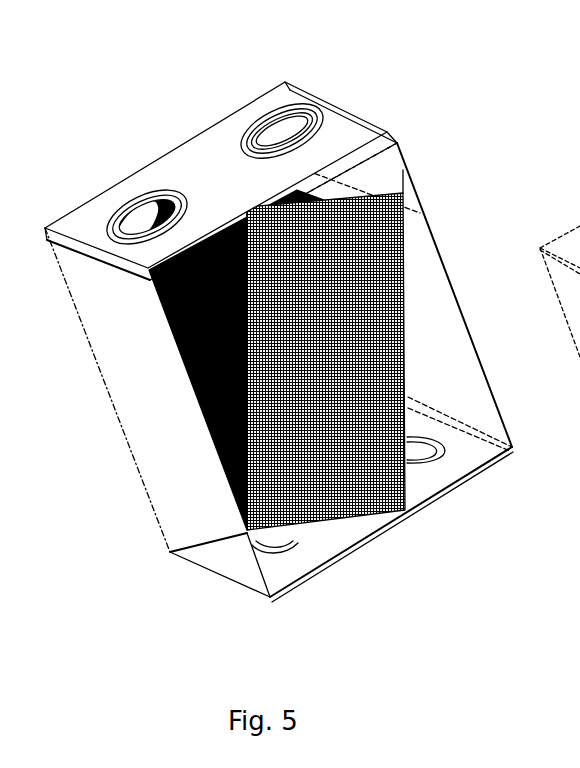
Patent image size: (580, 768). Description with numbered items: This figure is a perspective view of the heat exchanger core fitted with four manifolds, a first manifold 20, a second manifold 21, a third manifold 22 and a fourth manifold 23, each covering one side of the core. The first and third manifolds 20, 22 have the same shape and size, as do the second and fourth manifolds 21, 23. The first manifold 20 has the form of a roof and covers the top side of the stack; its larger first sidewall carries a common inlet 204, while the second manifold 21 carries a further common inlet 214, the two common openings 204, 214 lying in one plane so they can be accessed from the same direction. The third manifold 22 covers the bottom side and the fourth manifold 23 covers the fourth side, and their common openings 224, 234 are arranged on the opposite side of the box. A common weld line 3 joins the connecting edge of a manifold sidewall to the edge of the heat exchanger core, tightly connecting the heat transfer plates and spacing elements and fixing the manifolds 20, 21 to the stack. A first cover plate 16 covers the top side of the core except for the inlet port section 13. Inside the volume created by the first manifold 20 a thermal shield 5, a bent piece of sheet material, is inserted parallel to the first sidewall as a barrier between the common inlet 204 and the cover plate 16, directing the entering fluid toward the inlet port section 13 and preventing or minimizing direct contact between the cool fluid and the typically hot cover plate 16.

The first manifold 20 is at (258, 95).
The common inlet 204 is at (290, 122).
The common inlet of second manifold 214 is at (132, 207).
The common weld line 3 is at (177, 178).
The thermal shield 5 is at (362, 165).
The first cover plate 16 is at (378, 183).
The inlet port section 13 is at (388, 218).
The fourth manifold 23 is at (445, 340).
The second manifold 21 is at (135, 393).
The third manifold 22 is at (208, 553).
The common opening 224 is at (278, 550).
The common opening 234 is at (420, 465).